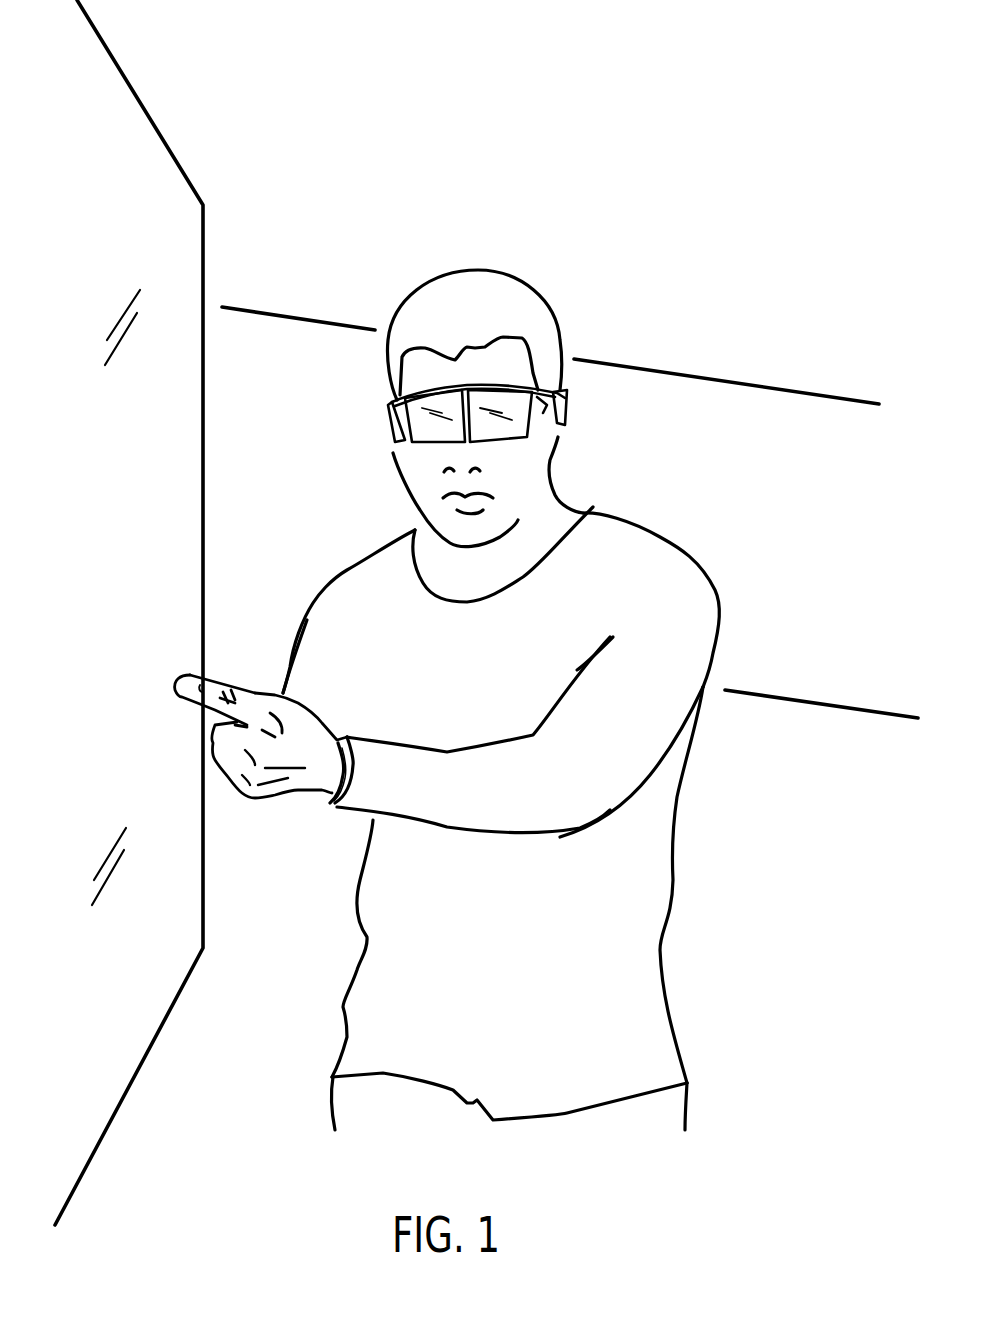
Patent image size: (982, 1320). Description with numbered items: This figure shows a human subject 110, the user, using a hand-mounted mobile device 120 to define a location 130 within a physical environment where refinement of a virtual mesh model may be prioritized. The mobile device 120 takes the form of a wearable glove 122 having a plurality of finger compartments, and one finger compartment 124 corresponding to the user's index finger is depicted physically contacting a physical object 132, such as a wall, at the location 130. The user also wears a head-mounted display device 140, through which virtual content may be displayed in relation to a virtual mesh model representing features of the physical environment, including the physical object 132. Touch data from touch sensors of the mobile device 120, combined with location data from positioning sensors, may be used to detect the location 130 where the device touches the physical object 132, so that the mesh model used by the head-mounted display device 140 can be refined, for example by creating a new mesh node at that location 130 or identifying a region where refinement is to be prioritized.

The human subject 110 is at (703, 600).
The mobile device 120 is at (223, 762).
The wearable glove 122 is at (272, 790).
The finger compartment 124 is at (210, 692).
The location 130 is at (168, 678).
The physical object 132 is at (183, 560).
The head-mounted display device 140 is at (558, 407).